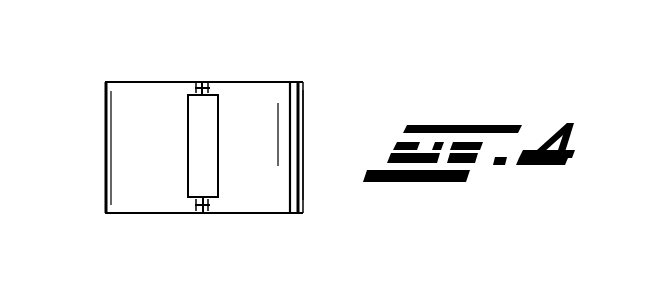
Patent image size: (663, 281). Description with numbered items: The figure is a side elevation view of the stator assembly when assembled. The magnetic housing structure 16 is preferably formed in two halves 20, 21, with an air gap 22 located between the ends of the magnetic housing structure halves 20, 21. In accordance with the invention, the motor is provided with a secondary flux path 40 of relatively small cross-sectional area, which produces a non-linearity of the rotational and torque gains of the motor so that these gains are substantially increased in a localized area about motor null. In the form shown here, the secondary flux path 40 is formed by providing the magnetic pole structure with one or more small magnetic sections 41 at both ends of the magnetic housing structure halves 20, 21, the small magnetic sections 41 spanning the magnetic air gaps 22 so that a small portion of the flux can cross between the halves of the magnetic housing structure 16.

The magnetic housing structure 16 is at (303, 108).
The magnetic housing structure half 20 is at (118, 172).
The magnetic housing structure half 21 is at (280, 187).
The air gap 22 is at (218, 125).
The secondary flux path 40 is at (184, 76).
The small magnetic section 41 is at (192, 82).